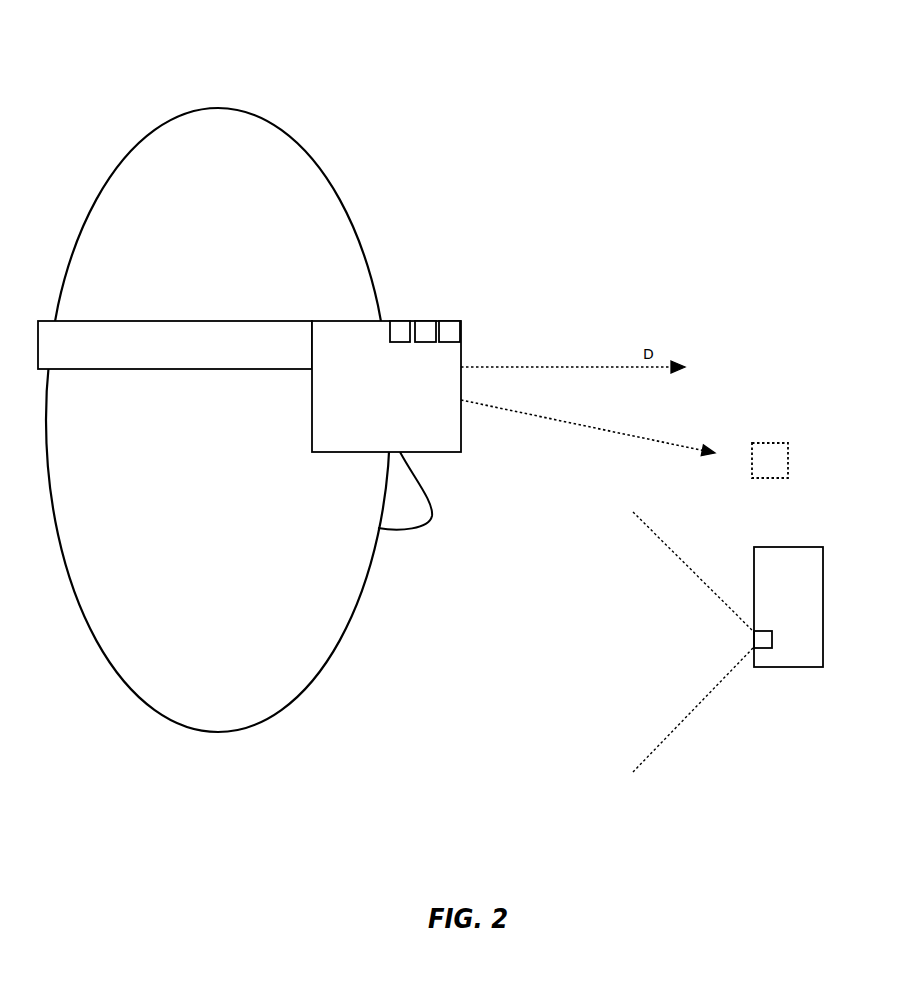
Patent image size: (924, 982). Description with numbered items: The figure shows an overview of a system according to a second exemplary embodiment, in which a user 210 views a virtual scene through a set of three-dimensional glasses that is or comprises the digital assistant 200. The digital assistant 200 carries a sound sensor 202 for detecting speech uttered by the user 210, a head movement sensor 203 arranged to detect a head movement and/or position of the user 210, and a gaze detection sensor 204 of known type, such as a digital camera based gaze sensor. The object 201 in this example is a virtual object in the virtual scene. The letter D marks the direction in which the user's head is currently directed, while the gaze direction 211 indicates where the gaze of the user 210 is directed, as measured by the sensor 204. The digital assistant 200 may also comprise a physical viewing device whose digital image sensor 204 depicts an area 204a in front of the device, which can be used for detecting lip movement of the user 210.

The user 210 is at (219, 107).
The digital assistant 200 is at (592, 510).
The sound sensor 202 is at (399, 321).
The head movement sensor 203 is at (426, 321).
The gaze detection sensor 204 is at (450, 321).
The area in front of the device 204a is at (680, 642).
The gaze direction 211 is at (588, 428).
The object 201 is at (788, 459).